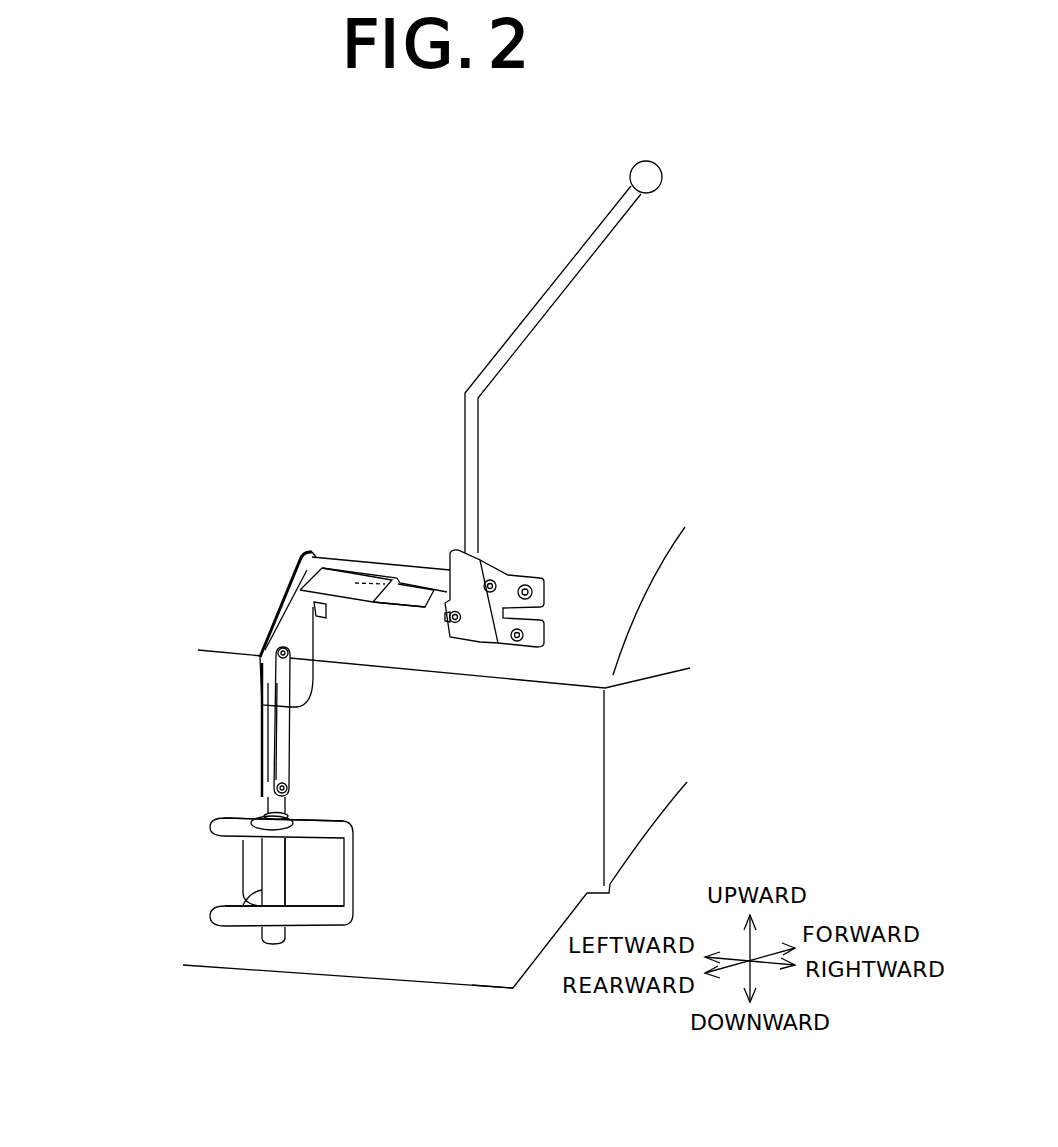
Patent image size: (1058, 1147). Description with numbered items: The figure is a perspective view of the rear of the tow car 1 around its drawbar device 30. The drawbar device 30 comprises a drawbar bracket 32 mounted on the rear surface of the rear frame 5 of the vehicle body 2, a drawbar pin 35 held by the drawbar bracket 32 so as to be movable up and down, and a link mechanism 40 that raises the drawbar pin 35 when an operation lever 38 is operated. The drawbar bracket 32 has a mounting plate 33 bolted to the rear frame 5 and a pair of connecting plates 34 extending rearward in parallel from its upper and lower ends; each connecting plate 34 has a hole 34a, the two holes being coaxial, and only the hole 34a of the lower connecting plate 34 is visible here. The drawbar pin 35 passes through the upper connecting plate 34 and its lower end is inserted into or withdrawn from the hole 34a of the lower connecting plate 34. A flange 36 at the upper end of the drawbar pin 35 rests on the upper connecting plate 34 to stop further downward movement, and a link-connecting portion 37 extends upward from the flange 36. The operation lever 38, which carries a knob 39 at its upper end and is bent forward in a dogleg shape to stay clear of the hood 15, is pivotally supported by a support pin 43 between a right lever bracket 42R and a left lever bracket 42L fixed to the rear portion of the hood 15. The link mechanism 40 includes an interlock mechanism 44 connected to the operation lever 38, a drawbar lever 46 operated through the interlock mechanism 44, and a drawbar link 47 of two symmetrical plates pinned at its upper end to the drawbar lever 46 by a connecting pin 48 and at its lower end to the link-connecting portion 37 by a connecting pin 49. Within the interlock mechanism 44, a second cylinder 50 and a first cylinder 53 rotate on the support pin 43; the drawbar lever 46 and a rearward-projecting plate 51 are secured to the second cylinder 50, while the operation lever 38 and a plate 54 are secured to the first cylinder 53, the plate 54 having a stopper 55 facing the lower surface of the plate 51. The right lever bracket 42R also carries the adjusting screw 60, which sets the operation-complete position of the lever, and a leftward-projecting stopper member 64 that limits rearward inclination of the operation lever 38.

The tow car 1 is at (313, 270).
The vehicle body 2 is at (527, 985).
The rear frame 5 is at (494, 983).
The hood 15 is at (583, 633).
The drawbar device 30 is at (218, 497).
The drawbar bracket 32 is at (328, 930).
The mounting plate 33 is at (250, 850).
The connecting plates 34 is at (237, 818).
The hole 34a is at (240, 890).
The drawbar pin 35 is at (262, 868).
The flange 36 is at (228, 828).
The link-connecting portion 37 is at (267, 807).
The operation lever 38 is at (602, 357).
The knob 39 is at (656, 179).
The link mechanism 40 is at (262, 593).
The left lever bracket 42L is at (313, 550).
The right lever bracket 42R is at (503, 612).
The support pin 43 is at (492, 580).
The interlock mechanism 44 is at (393, 547).
The drawbar lever 46 is at (282, 630).
The drawbar link 47 is at (270, 713).
The connecting pin 48 is at (262, 647).
The connecting pin 49 is at (288, 788).
The second cylinder 50 is at (358, 566).
The plate 51 is at (328, 552).
The first cylinder 53 is at (408, 571).
The plate 54 is at (400, 608).
The stopper 55 is at (346, 602).
The adjusting screw 60 is at (451, 624).
The stopper member 64 is at (451, 552).